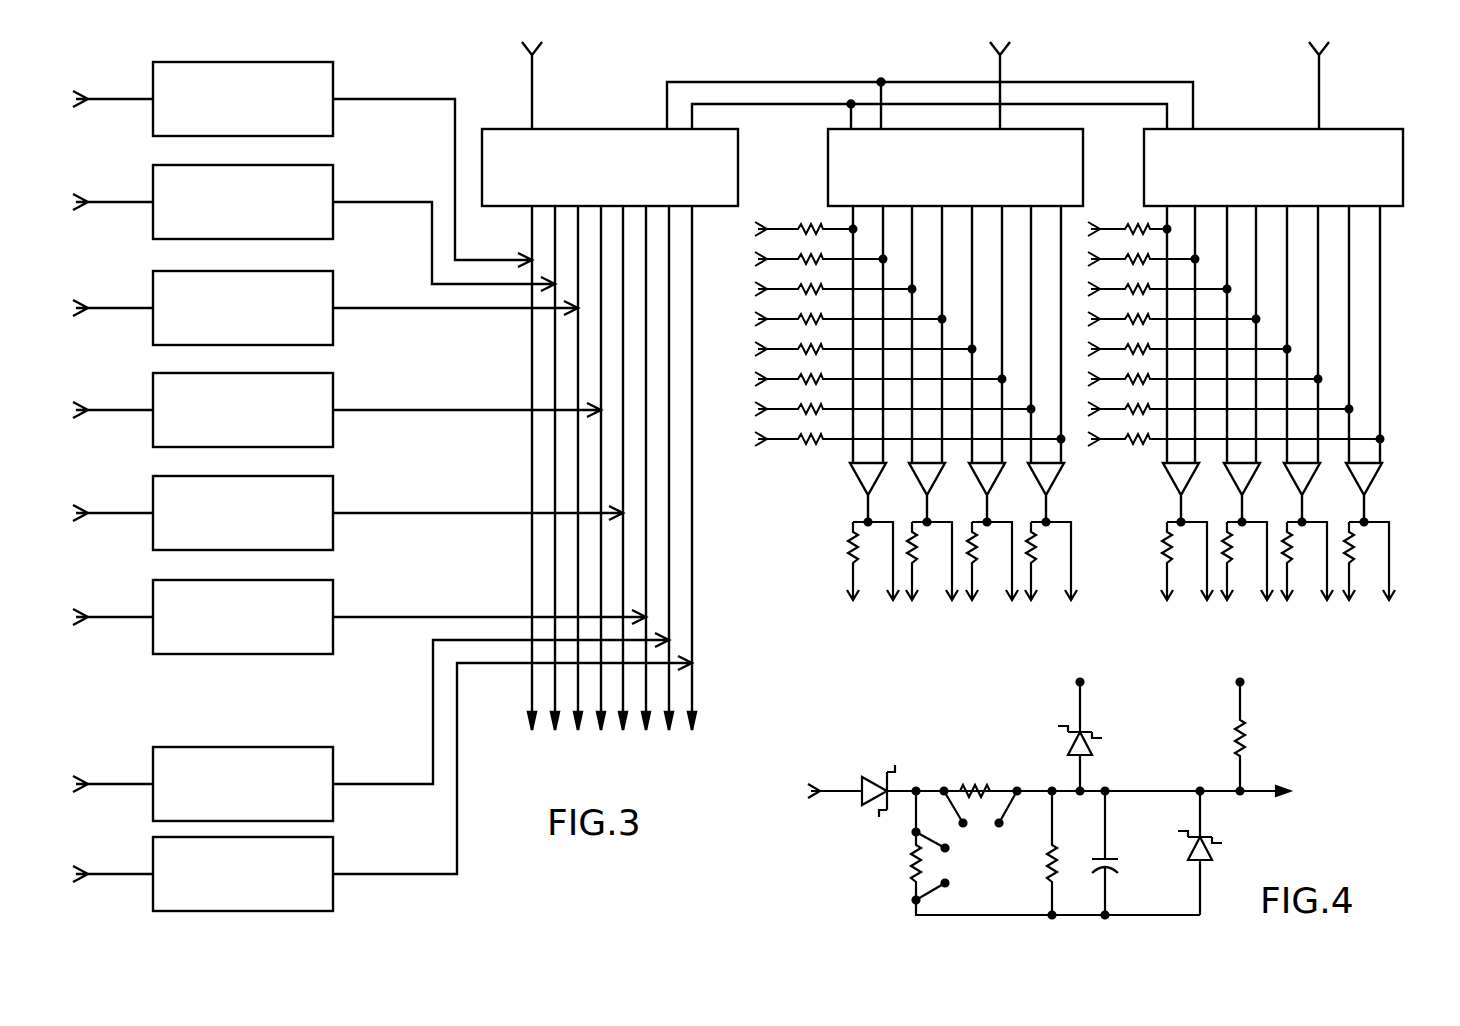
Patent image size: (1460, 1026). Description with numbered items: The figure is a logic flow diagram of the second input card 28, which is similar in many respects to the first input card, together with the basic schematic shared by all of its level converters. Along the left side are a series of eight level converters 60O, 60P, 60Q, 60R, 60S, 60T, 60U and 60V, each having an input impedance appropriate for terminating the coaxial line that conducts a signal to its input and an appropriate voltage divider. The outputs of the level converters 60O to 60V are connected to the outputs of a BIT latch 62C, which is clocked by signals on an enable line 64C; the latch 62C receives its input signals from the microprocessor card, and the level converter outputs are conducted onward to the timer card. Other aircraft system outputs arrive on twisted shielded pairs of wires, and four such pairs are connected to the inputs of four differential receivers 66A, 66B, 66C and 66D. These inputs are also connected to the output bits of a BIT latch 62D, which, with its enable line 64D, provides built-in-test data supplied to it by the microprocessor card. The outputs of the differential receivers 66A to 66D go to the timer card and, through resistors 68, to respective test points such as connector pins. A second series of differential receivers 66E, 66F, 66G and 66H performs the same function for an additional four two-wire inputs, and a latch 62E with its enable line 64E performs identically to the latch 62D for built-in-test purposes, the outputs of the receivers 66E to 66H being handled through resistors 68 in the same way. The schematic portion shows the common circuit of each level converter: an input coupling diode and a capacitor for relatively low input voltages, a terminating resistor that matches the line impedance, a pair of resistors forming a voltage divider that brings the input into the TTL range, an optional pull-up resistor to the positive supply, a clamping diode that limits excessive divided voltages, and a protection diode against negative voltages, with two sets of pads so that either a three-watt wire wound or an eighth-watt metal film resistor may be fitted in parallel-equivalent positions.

In FIG. 3, the level converter 60O is at (333, 75).
In FIG. 3, the level converter 60P is at (333, 178).
In FIG. 3, the level converter 60Q is at (333, 284).
In FIG. 3, the level converter 60R is at (333, 386).
In FIG. 3, the level converter 60S is at (333, 492).
In FIG. 3, the level converter 60T is at (333, 596).
In FIG. 3, the level converter 60U is at (333, 763).
In FIG. 3, the level converter 60V is at (333, 853).
In FIG. 3, the BIT latch 62C is at (738, 157).
In FIG. 3, the BIT latch 62D is at (1083, 157).
In FIG. 3, the latch 62E is at (1350, 129).
In FIG. 3, the enable line 64C is at (532, 70).
In FIG. 3, the enable line 64D is at (1000, 70).
In FIG. 3, the enable line 64E is at (1319, 70).
In FIG. 3, the differential receiver 66A is at (877, 478).
In FIG. 3, the differential receiver 66B is at (936, 478).
In FIG. 3, the differential receiver 66C is at (996, 478).
In FIG. 3, the differential receiver 66D is at (1055, 478).
In FIG. 3, the differential receiver 66E is at (1190, 478).
In FIG. 3, the differential receiver 66F is at (1251, 478).
In FIG. 3, the differential receiver 66G is at (1311, 478).
In FIG. 3, the differential receiver 66H is at (1373, 478).
In FIG. 3, the resistor 68 is at (857, 545).
In FIG. 4, the input card 28 is at (800, 606).